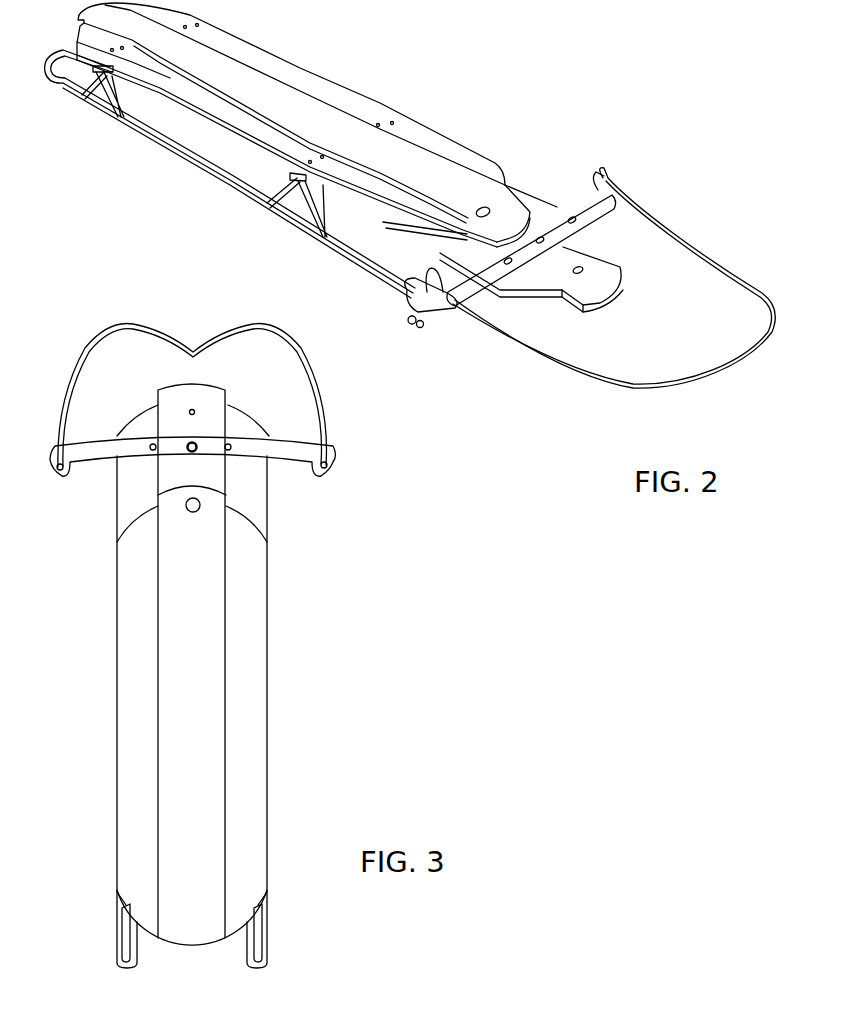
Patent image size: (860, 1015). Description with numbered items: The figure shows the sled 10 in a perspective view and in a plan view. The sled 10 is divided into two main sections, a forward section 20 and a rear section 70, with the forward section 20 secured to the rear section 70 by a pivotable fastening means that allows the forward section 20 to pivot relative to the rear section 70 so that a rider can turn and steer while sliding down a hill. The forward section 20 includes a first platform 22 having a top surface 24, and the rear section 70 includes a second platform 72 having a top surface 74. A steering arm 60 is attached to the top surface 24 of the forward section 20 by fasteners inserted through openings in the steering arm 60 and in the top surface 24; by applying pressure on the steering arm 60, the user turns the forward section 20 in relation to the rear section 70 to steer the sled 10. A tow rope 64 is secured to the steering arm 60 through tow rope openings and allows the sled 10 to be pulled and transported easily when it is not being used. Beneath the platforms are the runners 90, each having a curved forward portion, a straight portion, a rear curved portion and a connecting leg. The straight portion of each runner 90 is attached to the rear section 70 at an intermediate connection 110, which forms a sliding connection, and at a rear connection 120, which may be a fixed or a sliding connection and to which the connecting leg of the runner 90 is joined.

In FIG. 2, the sled 10 is at (446, 28).
In FIG. 2, the forward section 20 is at (528, 190).
In FIG. 3, the forward section 20 is at (117, 496).
In FIG. 3, the first platform 22 is at (267, 520).
In FIG. 3, the top surface 24 is at (256, 486).
In FIG. 2, the steering arm 60 is at (607, 200).
In FIG. 3, the steering arm 60 is at (327, 453).
In FIG. 2, the tow rope 64 is at (713, 373).
In FIG. 2, the rear section 70 is at (262, 50).
In FIG. 3, the rear section 70 is at (117, 688).
In FIG. 3, the second platform 72 is at (268, 578).
In FIG. 3, the top surface 74 is at (192, 683).
In FIG. 2, the runners 90 is at (187, 163).
In FIG. 2, the intermediate connection 110 is at (322, 232).
In FIG. 2, the rear connection 120 is at (113, 115).